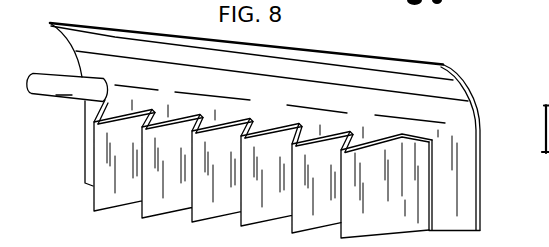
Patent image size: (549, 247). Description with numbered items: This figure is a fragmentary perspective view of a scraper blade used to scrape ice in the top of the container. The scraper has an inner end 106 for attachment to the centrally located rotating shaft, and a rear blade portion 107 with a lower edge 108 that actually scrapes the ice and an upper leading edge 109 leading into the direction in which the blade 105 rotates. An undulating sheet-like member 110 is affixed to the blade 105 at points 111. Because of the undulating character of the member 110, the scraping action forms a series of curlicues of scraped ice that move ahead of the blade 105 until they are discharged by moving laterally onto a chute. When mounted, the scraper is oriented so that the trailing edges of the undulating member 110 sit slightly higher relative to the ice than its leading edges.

The blade 105 is at (462, 83).
The inner end 106 is at (67, 87).
The rear blade portion 107 is at (480, 148).
The lower edge 108 is at (444, 229).
The upper leading edge 109 is at (362, 57).
The undulating sheet-like member 110 is at (205, 211).
The points 111 is at (301, 127).